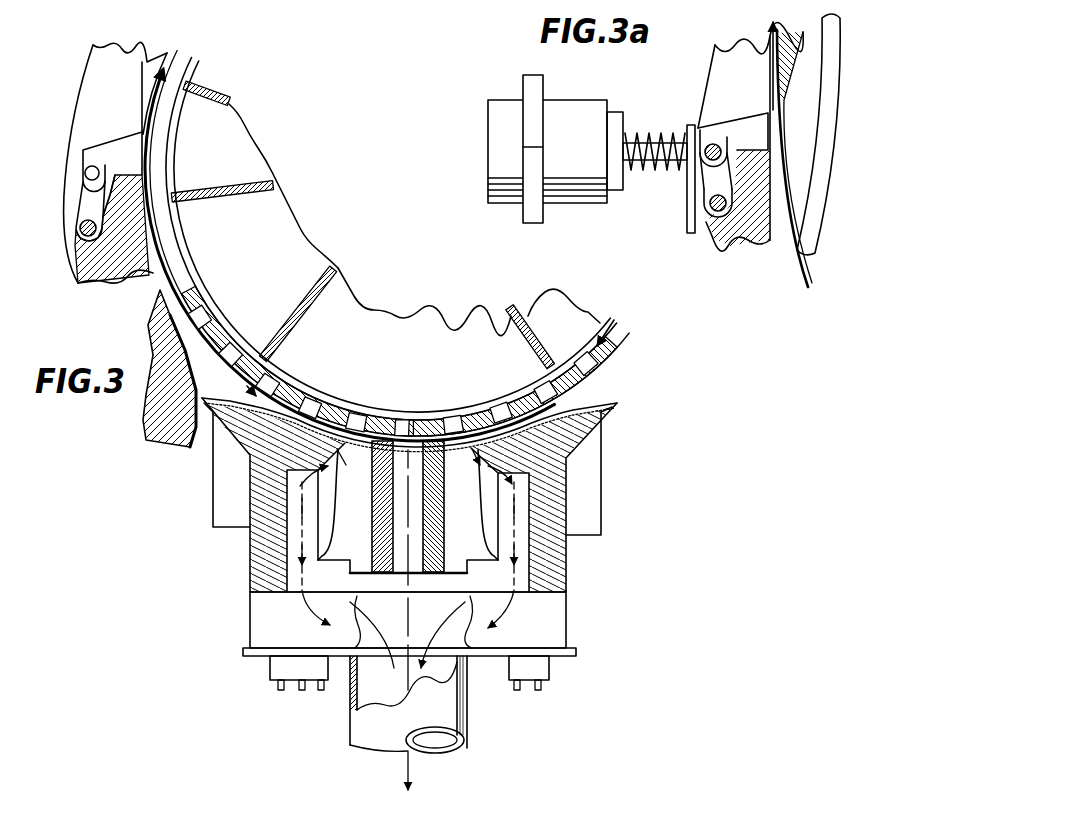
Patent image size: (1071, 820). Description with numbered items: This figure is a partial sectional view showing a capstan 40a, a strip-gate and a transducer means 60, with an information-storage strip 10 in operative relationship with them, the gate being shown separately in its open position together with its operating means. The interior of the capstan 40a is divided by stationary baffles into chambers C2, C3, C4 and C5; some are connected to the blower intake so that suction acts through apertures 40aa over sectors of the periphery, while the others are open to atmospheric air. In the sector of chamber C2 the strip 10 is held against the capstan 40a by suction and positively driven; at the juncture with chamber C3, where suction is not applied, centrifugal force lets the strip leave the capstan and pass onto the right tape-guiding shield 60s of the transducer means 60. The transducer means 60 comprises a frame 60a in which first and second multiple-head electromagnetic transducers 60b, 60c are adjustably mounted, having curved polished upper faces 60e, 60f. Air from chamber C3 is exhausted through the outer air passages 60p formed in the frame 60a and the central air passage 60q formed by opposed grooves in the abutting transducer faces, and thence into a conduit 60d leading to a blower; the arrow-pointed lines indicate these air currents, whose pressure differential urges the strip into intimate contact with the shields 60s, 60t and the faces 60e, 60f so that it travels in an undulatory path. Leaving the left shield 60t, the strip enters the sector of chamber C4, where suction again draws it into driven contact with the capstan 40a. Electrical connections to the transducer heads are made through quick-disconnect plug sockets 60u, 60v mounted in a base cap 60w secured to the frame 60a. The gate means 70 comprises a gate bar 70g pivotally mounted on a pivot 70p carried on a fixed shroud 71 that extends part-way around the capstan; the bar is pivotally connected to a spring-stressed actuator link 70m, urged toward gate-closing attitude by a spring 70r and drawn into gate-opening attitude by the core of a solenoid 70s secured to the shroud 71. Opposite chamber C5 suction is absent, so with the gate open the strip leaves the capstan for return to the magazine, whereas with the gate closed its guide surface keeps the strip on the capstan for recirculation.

In FIG. 3, the strip 10 is at (600, 349).
In FIG. 3, the capstan 40a is at (343, 412).
In FIG. 3, the apertures 40aa is at (441, 417).
In FIG. 3, the transducer means 60 is at (407, 540).
In FIG. 3, the frame 60a is at (555, 633).
In FIG. 3, the first multiple-head electromagnetic transducer 60b is at (478, 559).
In FIG. 3, the second multiple-head electromagnetic transducer 60c is at (368, 529).
In FIG. 3, the conduit 60d is at (447, 715).
In FIG. 3, the upper face 60e is at (458, 467).
In FIG. 3, the upper face 60f is at (331, 472).
In FIG. 3, the outer air passages 60p is at (318, 548).
In FIG. 3, the air passage 60q is at (410, 576).
In FIG. 3, the right tape-guiding shield 60s is at (617, 404).
In FIG. 3, the left tape-guiding shield 60t is at (206, 428).
In FIG. 3, the plug socket 60u is at (540, 667).
In FIG. 3, the plug socket 60v is at (278, 665).
In FIG. 3, the base cap 60w is at (243, 651).
In FIG. 3, the gate means 70 is at (97, 186).
In FIG. 3A, the gate means 70 is at (719, 147).
In FIG. 3, the gate bar 70g is at (97, 160).
In FIG. 3A, the gate bar 70g is at (735, 130).
In FIG. 3A, the actuator link 70m is at (650, 172).
In FIG. 3, the pivot 70p is at (82, 220).
In FIG. 3A, the pivot 70p is at (710, 206).
In FIG. 3A, the spring 70r is at (655, 138).
In FIG. 3A, the solenoid 70s is at (598, 115).
In FIG. 3, the shroud 71 is at (128, 268).
In FIG. 3A, the shroud 71 is at (720, 246).
In FIG. 3, the suction zone chamber C2 is at (558, 335).
In FIG. 3, the transducing zone chamber C3 is at (475, 337).
In FIG. 3, the suction chamber C4 is at (287, 310).
In FIG. 3, the gate zone chamber C5 is at (222, 141).